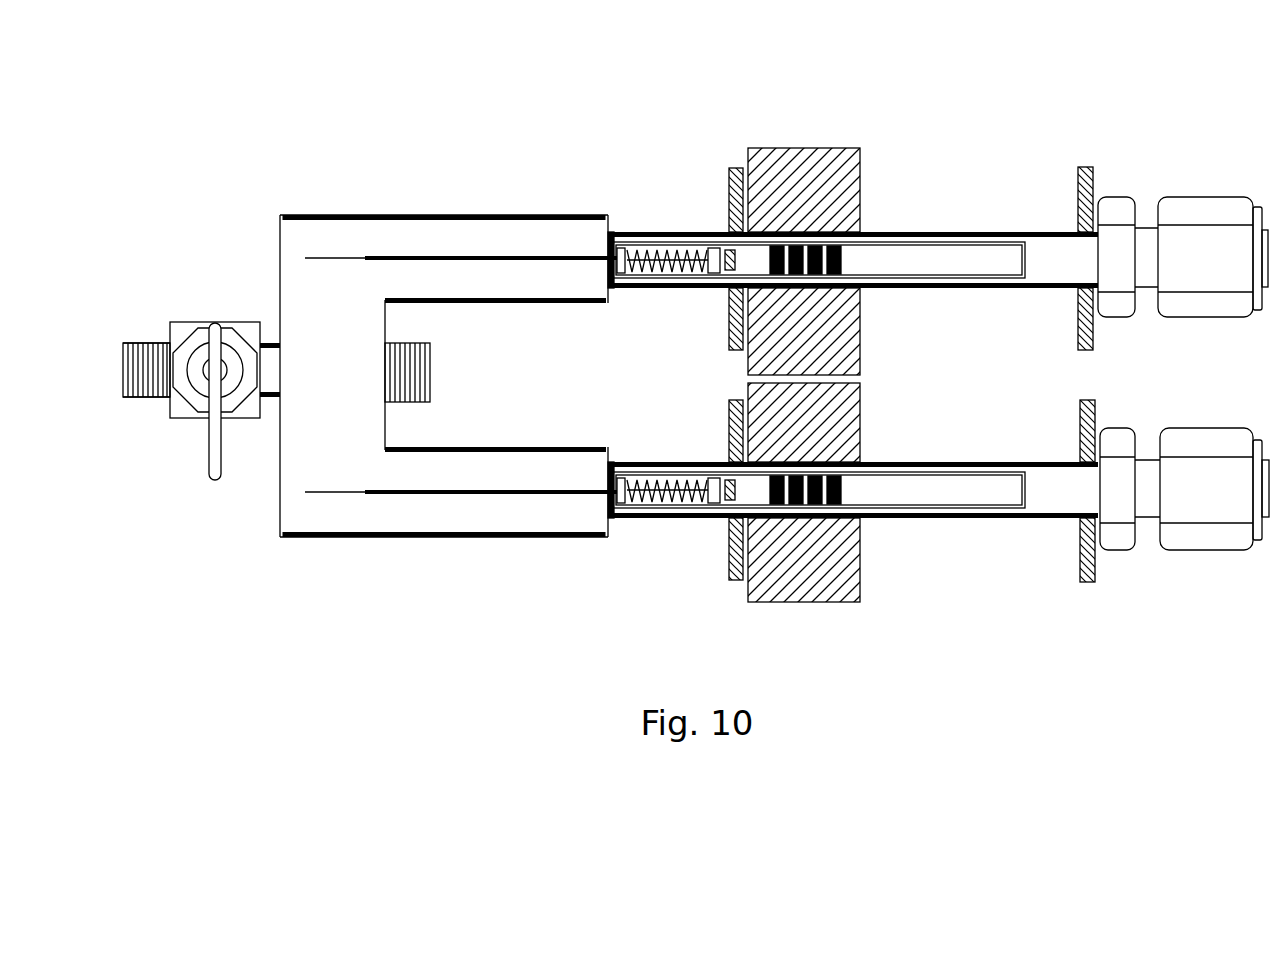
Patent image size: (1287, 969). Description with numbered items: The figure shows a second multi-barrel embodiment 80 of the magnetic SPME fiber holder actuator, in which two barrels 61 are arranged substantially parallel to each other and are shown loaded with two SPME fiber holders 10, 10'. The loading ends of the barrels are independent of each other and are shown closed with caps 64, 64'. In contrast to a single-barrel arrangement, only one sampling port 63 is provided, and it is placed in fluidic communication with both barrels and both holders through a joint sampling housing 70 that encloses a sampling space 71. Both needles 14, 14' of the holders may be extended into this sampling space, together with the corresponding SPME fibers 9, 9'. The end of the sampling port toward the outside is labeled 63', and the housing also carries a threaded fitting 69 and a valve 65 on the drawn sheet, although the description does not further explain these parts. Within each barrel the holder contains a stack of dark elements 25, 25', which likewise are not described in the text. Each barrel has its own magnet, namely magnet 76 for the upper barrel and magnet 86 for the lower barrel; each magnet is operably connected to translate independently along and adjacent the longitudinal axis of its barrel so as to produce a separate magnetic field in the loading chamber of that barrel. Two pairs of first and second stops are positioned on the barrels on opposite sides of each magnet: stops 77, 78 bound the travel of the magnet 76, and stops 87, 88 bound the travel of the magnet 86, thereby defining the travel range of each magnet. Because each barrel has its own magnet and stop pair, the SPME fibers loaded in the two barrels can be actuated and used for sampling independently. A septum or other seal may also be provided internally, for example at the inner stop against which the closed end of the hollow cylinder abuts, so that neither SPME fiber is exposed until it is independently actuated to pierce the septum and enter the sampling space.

The multi-barrel embodiment 80 is at (410, 118).
The joint sampling housing 70 is at (280, 505).
The sampling space 71 is at (346, 387).
The threaded port 69 is at (430, 372).
The valve 65 is at (225, 322).
The sampling port 63 is at (125, 395).
The threaded fitting end 63' is at (129, 344).
The SPME fiber 9 is at (335, 272).
The SPME fiber 9' is at (335, 505).
The needle 14 is at (491, 274).
The needle 14' is at (491, 508).
The barrel 61 is at (995, 233).
The SPME fiber holder 10 is at (819, 291).
The SPME fiber holder 10' is at (819, 521).
The explosive pellets 25 is at (838, 291).
The explosive pellets 25' is at (842, 523).
The magnet 76 is at (818, 148).
The first stop 77 is at (727, 202).
The second stop 78 is at (1093, 185).
The magnet 86 is at (818, 602).
The first stop 87 is at (728, 550).
The second stop 88 is at (1095, 565).
The cap 64 is at (1183, 236).
The cap 64' is at (1184, 465).